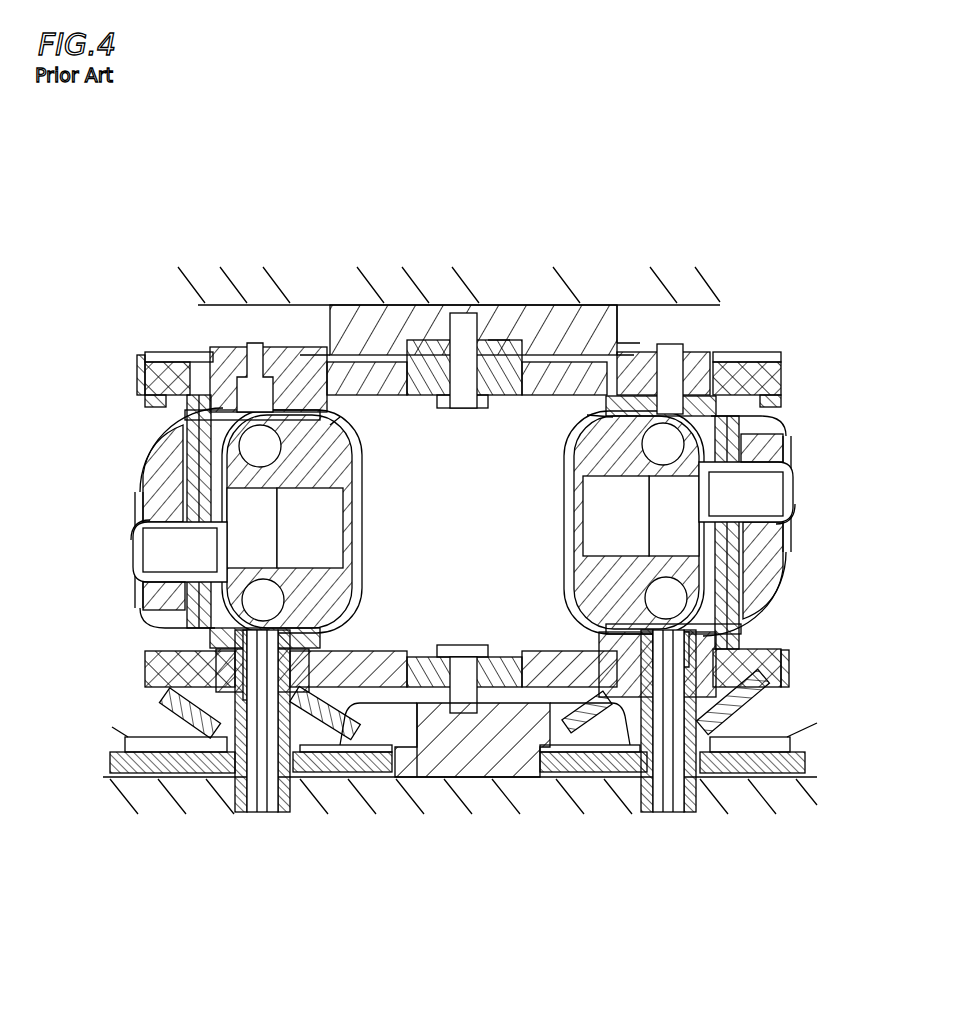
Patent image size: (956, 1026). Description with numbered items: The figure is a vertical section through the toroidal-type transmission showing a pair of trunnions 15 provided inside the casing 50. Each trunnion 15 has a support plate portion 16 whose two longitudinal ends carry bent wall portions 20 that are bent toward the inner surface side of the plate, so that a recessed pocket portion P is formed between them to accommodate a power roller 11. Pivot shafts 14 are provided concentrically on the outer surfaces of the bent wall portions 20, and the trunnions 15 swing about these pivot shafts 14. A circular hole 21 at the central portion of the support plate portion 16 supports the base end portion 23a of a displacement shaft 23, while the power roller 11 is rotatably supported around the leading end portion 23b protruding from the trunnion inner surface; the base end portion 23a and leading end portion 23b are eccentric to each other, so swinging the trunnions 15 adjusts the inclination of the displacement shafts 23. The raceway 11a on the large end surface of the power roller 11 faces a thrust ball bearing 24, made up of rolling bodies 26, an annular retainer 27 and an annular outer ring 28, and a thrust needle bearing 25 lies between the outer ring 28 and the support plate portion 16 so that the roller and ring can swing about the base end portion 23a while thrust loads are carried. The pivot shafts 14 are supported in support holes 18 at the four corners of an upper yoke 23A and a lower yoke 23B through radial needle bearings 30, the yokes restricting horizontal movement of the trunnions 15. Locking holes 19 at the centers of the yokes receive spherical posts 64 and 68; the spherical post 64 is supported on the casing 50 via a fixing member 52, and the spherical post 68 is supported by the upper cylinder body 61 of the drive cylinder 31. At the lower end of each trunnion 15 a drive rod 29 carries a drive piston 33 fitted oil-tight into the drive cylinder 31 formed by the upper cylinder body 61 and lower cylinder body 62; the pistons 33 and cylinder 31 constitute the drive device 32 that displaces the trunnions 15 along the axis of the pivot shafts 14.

The power roller 11 is at (341, 447).
The bearing balls 11a is at (345, 423).
The pivot shaft 14 is at (178, 362).
The trunnion 15 is at (155, 470).
The support plate portion 16 is at (153, 447).
The support hole 18 is at (308, 302).
The locking hole 19 is at (488, 340).
The bent wall portion 20 is at (273, 440).
The circular hole 21 is at (134, 521).
The displacement shaft 23 is at (140, 540).
The base end portion 23a is at (160, 563).
The leading end portion 23b is at (344, 502).
The yoke 23A is at (147, 358).
The yoke 23B is at (775, 675).
The thrust ball bearing 24 is at (147, 363).
The thrust needle bearing 25 is at (160, 607).
The rolling body 26 is at (145, 445).
The retainer 27 is at (225, 365).
The outer ring 28 is at (178, 423).
The drive rod 29 is at (242, 808).
The radial needle bearing 30 is at (195, 362).
The drive cylinder 31 is at (517, 835).
The drive device 32 is at (313, 797).
The drive piston 33 is at (143, 774).
The casing 50 is at (610, 345).
The fixing member 52 is at (540, 313).
The upper cylinder body 61 is at (483, 779).
The lower cylinder body 62 is at (457, 790).
The spherical post 64 is at (432, 345).
The spherical post 68 is at (512, 647).
The pocket portion P is at (471, 412).